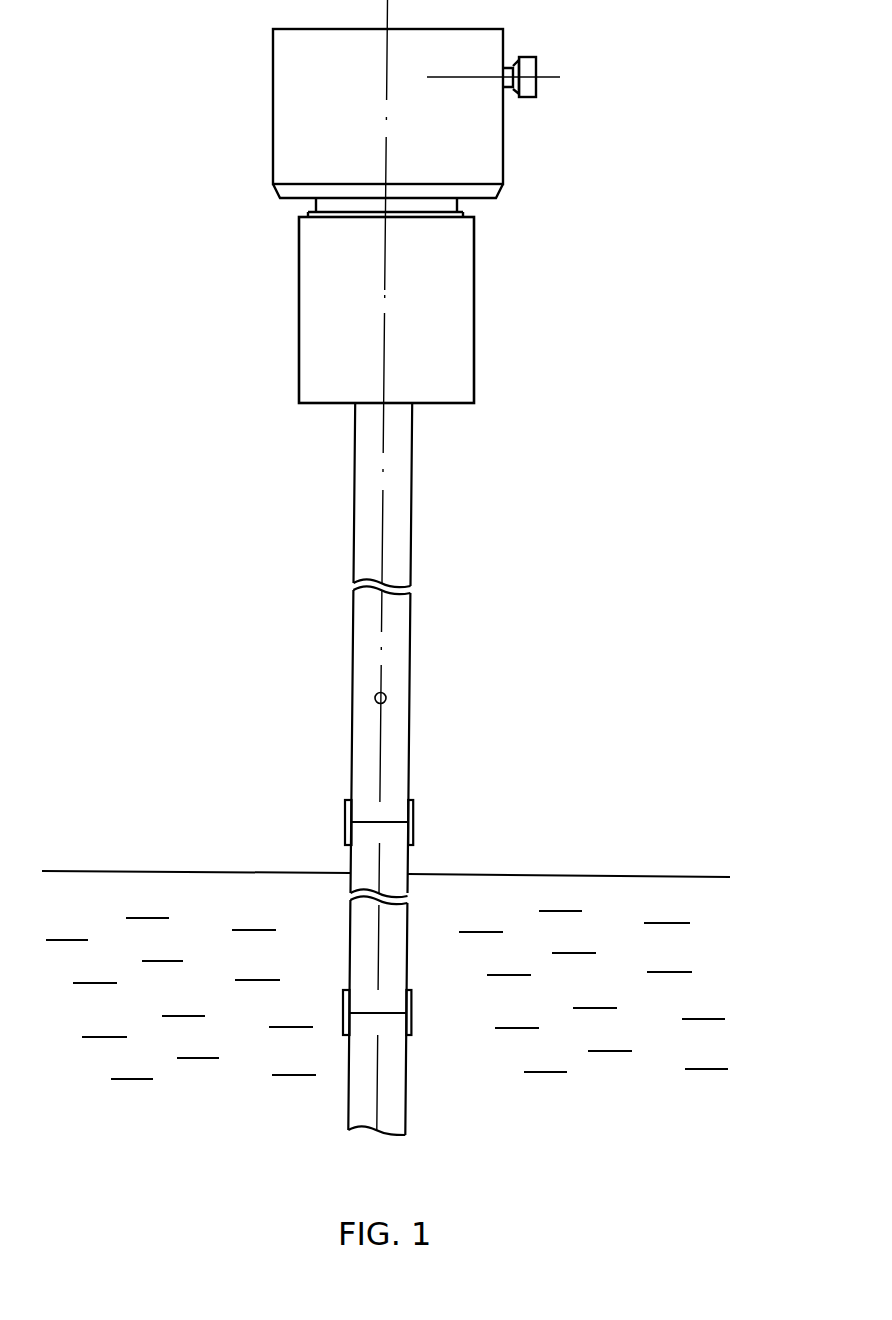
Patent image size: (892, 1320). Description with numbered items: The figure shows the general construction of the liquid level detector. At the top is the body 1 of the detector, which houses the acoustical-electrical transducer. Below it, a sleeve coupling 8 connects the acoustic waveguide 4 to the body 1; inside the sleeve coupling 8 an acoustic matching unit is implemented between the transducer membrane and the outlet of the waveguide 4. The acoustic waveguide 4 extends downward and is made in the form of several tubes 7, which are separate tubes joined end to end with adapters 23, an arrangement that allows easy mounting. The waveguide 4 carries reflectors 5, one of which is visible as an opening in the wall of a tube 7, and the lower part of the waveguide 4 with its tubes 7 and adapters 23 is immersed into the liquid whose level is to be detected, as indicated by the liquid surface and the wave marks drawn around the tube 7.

The body of the detector 1 is at (467, 147).
The sleeve coupling 8 is at (451, 286).
The acoustic waveguide 4 is at (400, 470).
The tube 7 is at (411, 529).
The reflector 5 is at (376, 696).
The adapter 23 is at (413, 820).